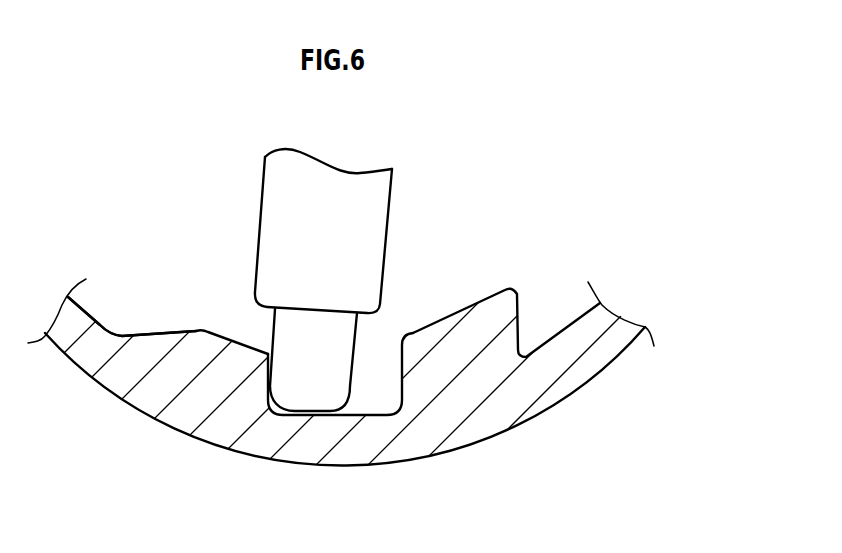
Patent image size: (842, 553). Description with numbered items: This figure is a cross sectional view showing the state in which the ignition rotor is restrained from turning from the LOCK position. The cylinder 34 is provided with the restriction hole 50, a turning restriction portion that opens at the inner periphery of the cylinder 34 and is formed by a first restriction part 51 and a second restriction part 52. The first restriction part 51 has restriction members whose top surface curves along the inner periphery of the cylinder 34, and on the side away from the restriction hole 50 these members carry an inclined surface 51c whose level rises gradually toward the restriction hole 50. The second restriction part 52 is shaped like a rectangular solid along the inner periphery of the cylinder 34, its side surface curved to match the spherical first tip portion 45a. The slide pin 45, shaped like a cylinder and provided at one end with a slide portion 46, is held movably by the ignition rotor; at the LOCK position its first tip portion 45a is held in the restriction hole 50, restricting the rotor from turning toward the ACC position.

The cylinder 34 is at (172, 420).
The slide pin 45 is at (343, 303).
The first tip portion 45a is at (328, 397).
The slide portion 46 is at (373, 202).
The restriction hole 50 is at (268, 375).
The first restriction part 51 is at (222, 340).
The inclined surface 51c is at (150, 333).
The second restriction part 52 is at (471, 333).